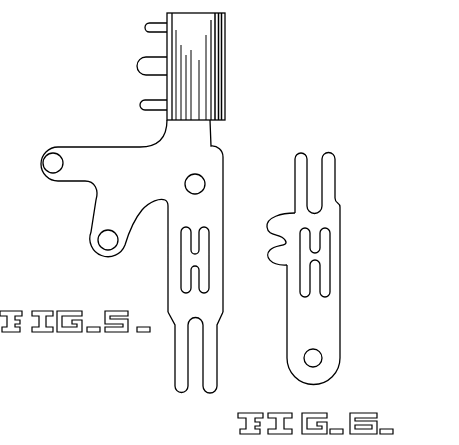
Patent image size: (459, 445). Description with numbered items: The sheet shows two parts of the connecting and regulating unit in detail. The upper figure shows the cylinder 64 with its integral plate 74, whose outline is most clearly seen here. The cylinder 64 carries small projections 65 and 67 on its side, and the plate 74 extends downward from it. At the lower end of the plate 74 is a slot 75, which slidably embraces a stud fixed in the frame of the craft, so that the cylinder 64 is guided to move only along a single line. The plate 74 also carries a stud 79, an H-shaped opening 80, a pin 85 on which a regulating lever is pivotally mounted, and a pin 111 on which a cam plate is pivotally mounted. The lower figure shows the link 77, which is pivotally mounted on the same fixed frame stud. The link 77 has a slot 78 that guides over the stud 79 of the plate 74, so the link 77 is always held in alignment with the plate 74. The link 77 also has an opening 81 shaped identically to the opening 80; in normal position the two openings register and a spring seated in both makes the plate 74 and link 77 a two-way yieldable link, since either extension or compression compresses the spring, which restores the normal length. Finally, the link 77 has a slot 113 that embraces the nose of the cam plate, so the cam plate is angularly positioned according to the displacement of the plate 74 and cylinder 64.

In FIG. 5, the cylinder 64 is at (226, 58).
In FIG. 5, the pins 65 is at (145, 27).
In FIG. 5, the pin 67 is at (138, 65).
In FIG. 5, the plate 74 is at (115, 146).
In FIG. 5, the slot 75 is at (193, 337).
In FIG. 5, the stud 79 is at (200, 179).
In FIG. 5, the H-shaped opening 80 is at (192, 260).
In FIG. 5, the pin 85 is at (56, 165).
In FIG. 5, the pin 111 is at (102, 243).
In FIG. 6, the link 77 is at (340, 337).
In FIG. 6, the slot 78 is at (313, 165).
In FIG. 6, the H-shaped opening 81 is at (317, 266).
In FIG. 6, the slot 113 is at (265, 243).